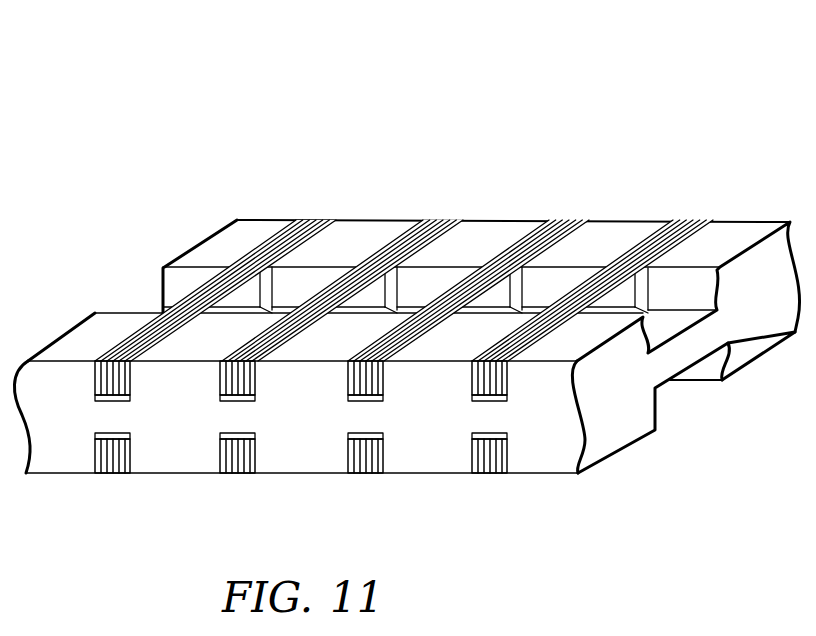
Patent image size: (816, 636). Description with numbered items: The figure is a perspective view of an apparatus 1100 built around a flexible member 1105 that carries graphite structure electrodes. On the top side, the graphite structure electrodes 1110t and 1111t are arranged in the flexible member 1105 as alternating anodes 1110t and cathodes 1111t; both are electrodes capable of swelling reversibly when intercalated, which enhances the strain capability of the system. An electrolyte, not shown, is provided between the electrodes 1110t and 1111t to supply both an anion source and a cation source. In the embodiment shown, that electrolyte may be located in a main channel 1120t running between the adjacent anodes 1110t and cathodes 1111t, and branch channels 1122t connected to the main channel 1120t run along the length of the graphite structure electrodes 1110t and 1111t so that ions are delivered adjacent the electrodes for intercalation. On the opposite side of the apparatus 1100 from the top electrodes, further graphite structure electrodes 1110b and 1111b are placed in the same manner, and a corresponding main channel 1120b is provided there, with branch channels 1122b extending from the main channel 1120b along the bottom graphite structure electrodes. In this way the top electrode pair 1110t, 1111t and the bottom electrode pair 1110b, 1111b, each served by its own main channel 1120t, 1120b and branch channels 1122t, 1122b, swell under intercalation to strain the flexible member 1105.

The apparatus 1100 is at (210, 188).
The flexible member 1105 is at (55, 380).
The graphite structure electrode (anode) 1110t is at (325, 220).
The graphite structure electrode (cathode) 1111t is at (450, 220).
The graphite structure electrode 1110b is at (118, 462).
The graphite structure electrode 1111b is at (243, 462).
The main channel 1120t is at (685, 318).
The main channel 1120b is at (712, 358).
The branch channel 1122t is at (243, 398).
The branch channel 1122b is at (93, 437).